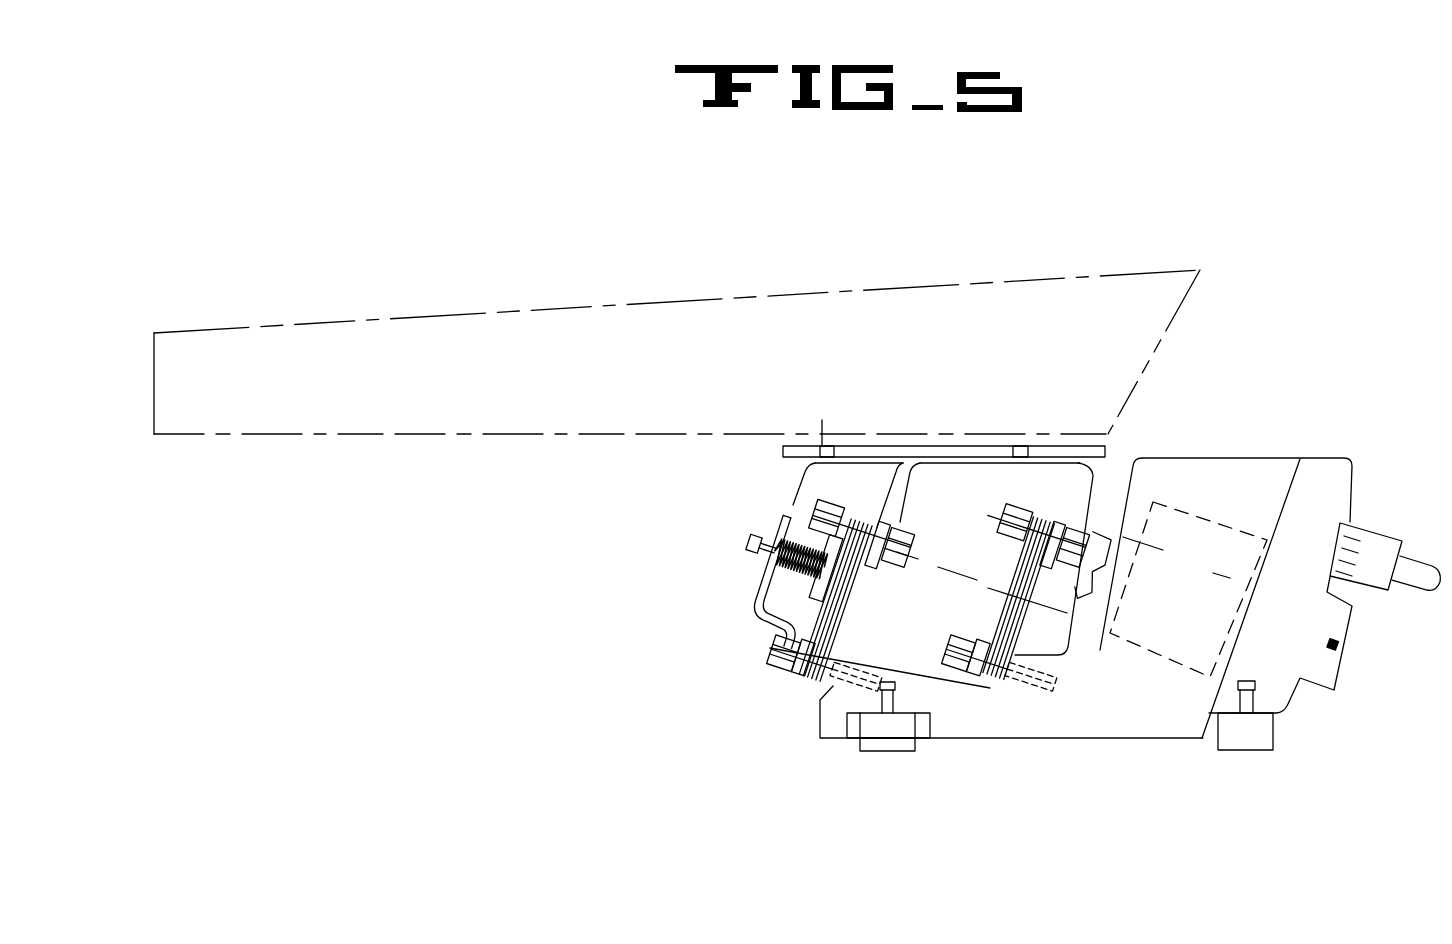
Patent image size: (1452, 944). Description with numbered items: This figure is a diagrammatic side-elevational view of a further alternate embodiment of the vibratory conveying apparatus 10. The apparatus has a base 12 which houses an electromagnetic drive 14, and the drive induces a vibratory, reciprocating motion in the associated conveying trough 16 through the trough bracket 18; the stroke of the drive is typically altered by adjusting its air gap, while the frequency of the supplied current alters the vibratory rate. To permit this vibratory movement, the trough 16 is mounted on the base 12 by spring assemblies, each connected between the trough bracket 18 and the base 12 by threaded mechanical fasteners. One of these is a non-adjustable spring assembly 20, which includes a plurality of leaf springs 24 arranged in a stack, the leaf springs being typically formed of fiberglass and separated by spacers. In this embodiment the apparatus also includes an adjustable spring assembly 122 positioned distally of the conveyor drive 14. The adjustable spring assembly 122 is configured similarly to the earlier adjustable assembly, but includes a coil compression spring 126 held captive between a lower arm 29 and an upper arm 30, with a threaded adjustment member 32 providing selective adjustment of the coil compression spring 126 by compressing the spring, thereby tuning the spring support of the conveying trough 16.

The vibratory conveying apparatus 10 is at (1303, 264).
The base 12 is at (1277, 458).
The electromagnetic drive 14 is at (1153, 657).
The conveying trough 16 is at (887, 287).
The trough bracket 18 is at (1100, 462).
The non-adjustable spring assembly 20 is at (993, 597).
The leaf springs 24 is at (860, 518).
The coil spring 29 is at (763, 573).
The upper arm 30 is at (827, 547).
The threaded adjustment member 32 is at (748, 541).
The adjustable spring assembly 122 is at (751, 606).
The coil compression spring 126 is at (757, 580).